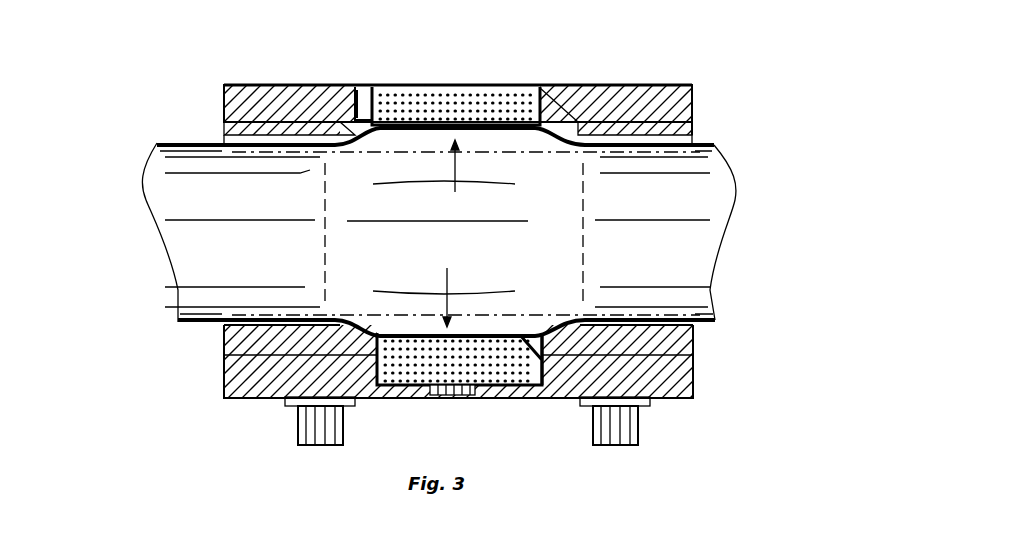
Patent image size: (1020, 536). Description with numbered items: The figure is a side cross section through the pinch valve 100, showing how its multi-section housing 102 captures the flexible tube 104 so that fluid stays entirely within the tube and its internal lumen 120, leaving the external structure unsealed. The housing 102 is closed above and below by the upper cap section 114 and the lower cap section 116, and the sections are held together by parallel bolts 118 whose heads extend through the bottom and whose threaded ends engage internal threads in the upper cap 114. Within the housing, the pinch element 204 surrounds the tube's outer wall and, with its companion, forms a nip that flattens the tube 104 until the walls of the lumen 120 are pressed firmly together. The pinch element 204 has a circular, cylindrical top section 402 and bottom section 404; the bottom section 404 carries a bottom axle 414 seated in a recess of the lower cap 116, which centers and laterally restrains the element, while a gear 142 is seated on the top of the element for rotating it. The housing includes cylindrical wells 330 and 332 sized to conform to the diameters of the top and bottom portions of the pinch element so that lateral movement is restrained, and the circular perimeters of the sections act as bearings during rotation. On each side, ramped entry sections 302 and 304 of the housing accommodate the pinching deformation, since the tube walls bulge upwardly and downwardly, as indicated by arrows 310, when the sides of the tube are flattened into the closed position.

The pinch valve 100 is at (803, 110).
The multi-section housing 102 is at (655, 84).
The tube 104 is at (176, 136).
The upper cap section 114 is at (692, 100).
The lower cap section 116 is at (693, 385).
The bolts 118 is at (343, 425).
The internal lumen 120 is at (195, 200).
The gear 142 is at (532, 85).
The pinch element 204 is at (467, 85).
The ramped entry section 302 is at (330, 85).
The ramped entry section 304 is at (693, 352).
The arrows 310 is at (455, 190).
The cylindrical well 330 is at (578, 85).
The cylindrical well 332 is at (543, 377).
The top section 402 is at (507, 85).
The bottom section 404 is at (400, 398).
The bottom axle 414 is at (470, 398).